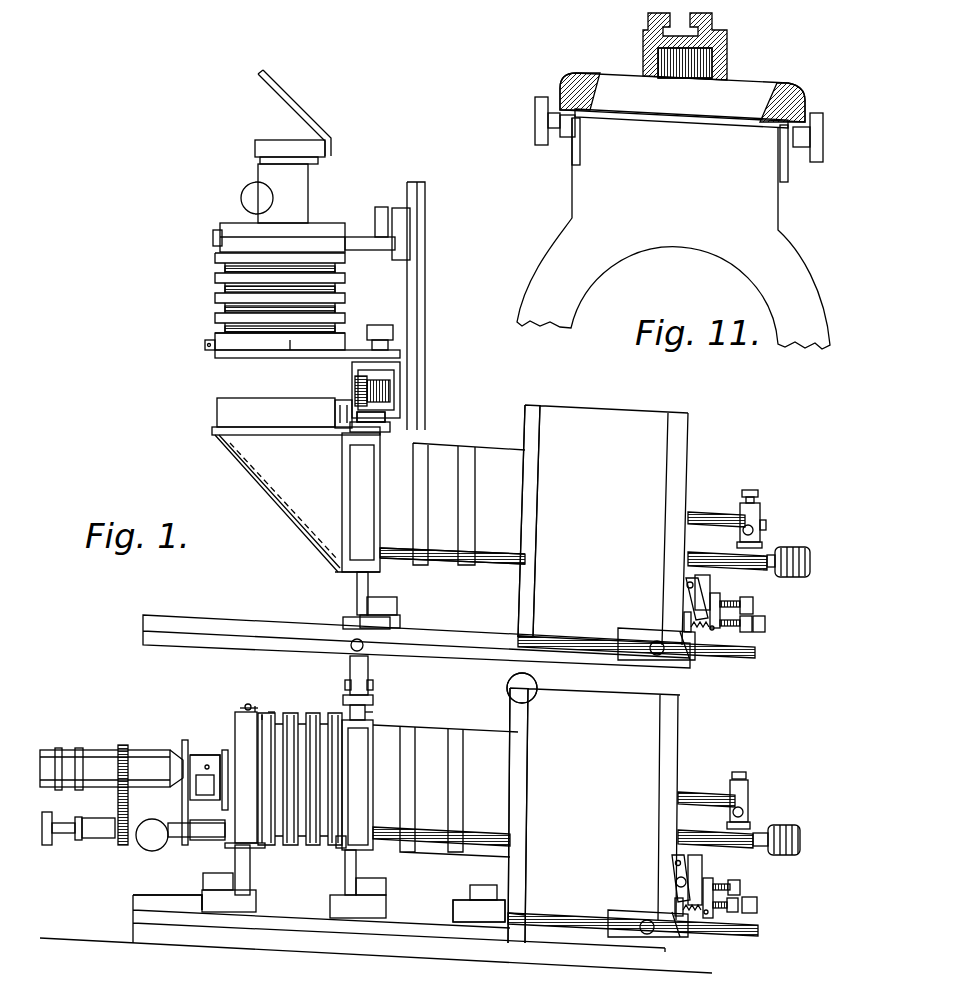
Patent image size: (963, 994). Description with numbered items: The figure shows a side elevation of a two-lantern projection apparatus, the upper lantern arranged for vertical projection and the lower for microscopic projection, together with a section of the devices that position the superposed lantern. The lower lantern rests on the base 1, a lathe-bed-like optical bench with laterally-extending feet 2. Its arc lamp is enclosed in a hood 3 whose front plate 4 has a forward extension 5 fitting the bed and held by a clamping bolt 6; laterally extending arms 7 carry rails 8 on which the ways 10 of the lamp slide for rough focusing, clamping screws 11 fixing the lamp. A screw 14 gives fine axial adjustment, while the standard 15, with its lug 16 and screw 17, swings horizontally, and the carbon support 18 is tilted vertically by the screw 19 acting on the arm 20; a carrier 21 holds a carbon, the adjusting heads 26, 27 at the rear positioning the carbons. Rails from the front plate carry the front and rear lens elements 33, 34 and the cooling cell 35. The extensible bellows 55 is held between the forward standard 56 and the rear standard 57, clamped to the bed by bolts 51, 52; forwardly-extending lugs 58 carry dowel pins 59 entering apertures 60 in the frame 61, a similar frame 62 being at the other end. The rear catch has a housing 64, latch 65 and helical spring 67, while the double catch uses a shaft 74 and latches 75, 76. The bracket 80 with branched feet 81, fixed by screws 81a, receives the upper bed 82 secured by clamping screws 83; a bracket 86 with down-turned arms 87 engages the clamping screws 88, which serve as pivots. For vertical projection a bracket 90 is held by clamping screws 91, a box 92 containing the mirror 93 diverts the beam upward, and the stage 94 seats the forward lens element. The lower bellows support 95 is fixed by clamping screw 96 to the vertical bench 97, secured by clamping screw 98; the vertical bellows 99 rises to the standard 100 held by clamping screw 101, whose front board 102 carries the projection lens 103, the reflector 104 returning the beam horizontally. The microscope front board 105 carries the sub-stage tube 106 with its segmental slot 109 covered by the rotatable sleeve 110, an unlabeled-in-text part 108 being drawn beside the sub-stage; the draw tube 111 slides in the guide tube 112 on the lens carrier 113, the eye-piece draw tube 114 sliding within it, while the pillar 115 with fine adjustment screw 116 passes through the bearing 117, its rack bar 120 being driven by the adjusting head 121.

In FIG. 1, the base 1 is at (347, 924).
In FIG. 1, the laterally-extending feet 2 is at (160, 940).
In FIG. 1, the hood 3 is at (598, 674).
In FIG. 11, the front plate 4 is at (673, 233).
In FIG. 1, the front plate 4 is at (531, 608).
In FIG. 1, the forward extension 5 is at (488, 908).
In FIG. 1, the clamping bolt 6 is at (482, 890).
In FIG. 1, the laterally extending arms 7 is at (535, 634).
In FIG. 1, the rails 8 is at (596, 638).
In FIG. 1, the ways 10 is at (684, 642).
In FIG. 1, the clamping screws 11 is at (655, 640).
In FIG. 1, the screw 14 is at (768, 630).
In FIG. 1, the standard 15 is at (705, 600).
In FIG. 1, the lug 16 is at (688, 620).
In FIG. 1, the screw 17 is at (760, 624).
In FIG. 1, the carbon support 18 is at (692, 583).
In FIG. 1, the screw 19 is at (750, 608).
In FIG. 1, the arm 20 is at (715, 608).
In FIG. 1, the carrier 21 is at (752, 516).
In FIG. 1, the adjusting head 26 is at (790, 548).
In FIG. 1, the adjusting head 27 is at (800, 556).
In FIG. 1, the front lens element 33 is at (388, 730).
In FIG. 1, the rear lens element 34 is at (478, 735).
In FIG. 1, the water tank or cooling cell 35 is at (430, 735).
In FIG. 1, the clamping bolt 51 is at (395, 605).
In FIG. 1, the clamping bolt 52 is at (210, 880).
In FIG. 1, the extensible bellows 55 is at (300, 795).
In FIG. 1, the forward standard 56 is at (264, 714).
In FIG. 1, the rear standard 57 is at (348, 492).
In FIG. 1, the forwardly-extending lugs 58 is at (342, 570).
In FIG. 1, the dowel pins 59 is at (353, 832).
In FIG. 1, the apertures 60 is at (248, 245).
In FIG. 1, the frame 61 is at (295, 342).
In FIG. 1, the frame 62 is at (250, 835).
In FIG. 1, the housing 64 is at (345, 688).
In FIG. 1, the latch 65 is at (342, 712).
In FIG. 1, the helical spring 67 is at (362, 602).
In FIG. 1, the pin or shaft 74 is at (256, 705).
In FIG. 1, the latch 75 is at (248, 704).
In FIG. 1, the latch 76 is at (268, 720).
In FIG. 1, the bracket 80 is at (350, 680).
In FIG. 1, the branched feet 81 is at (368, 705).
In FIG. 1, the screws 81a is at (370, 690).
In FIG. 11, the bed 82 is at (715, 40).
In FIG. 1, the bed 82 is at (418, 640).
In FIG. 1, the clamping screws 83 is at (345, 628).
In FIG. 11, the bracket 86 is at (682, 100).
In FIG. 11, the down-turned arms 87 is at (795, 108).
In FIG. 1, the down-turned arms 87 is at (538, 676).
In FIG. 11, the clamping screws 88 is at (540, 145).
In FIG. 1, the clamping screws 88 is at (534, 694).
In FIG. 1, the bracket 90 is at (400, 395).
In FIG. 1, the clamping screws 91 is at (398, 412).
In FIG. 1, the box 92 is at (255, 452).
In FIG. 1, the mirror 93 is at (262, 490).
In FIG. 1, the stage 94 is at (238, 428).
In FIG. 1, the lower bellows support 95 is at (238, 352).
In FIG. 1, the clamping screw 96 is at (382, 330).
In FIG. 1, the vertically-extending bench 97 is at (422, 252).
In FIG. 1, the clamping screw 98 is at (356, 380).
In FIG. 1, the vertical bellows 99 is at (226, 285).
In FIG. 1, the standard or support 100 is at (322, 240).
In FIG. 1, the clamping screw 101 is at (383, 212).
In FIG. 1, the front board 102 is at (230, 225).
In FIG. 1, the projection lens 103 is at (296, 194).
In FIG. 1, the mirror or reflector 104 is at (300, 122).
In FIG. 1, the front board 105 is at (230, 730).
In FIG. 1, the sub-stage tube 106 is at (207, 790).
In FIG. 1, the plate 108 is at (182, 742).
In FIG. 1, the segmental slot 109 is at (207, 756).
In FIG. 1, the rotatable sleeve 110 is at (198, 755).
In FIG. 1, the draw tube 111 is at (140, 760).
In FIG. 1, the guide tube 112 is at (111, 768).
In FIG. 1, the lens carrier 113 is at (124, 745).
In FIG. 1, the draw tube 114 is at (58, 748).
In FIG. 1, the pillar 115 is at (110, 840).
In FIG. 1, the fine adjustment screw 116 is at (50, 845).
In FIG. 1, the bearing 117 is at (158, 842).
In FIG. 1, the rack bar 120 is at (196, 840).
In FIG. 1, the adjusting head 121 is at (150, 852).